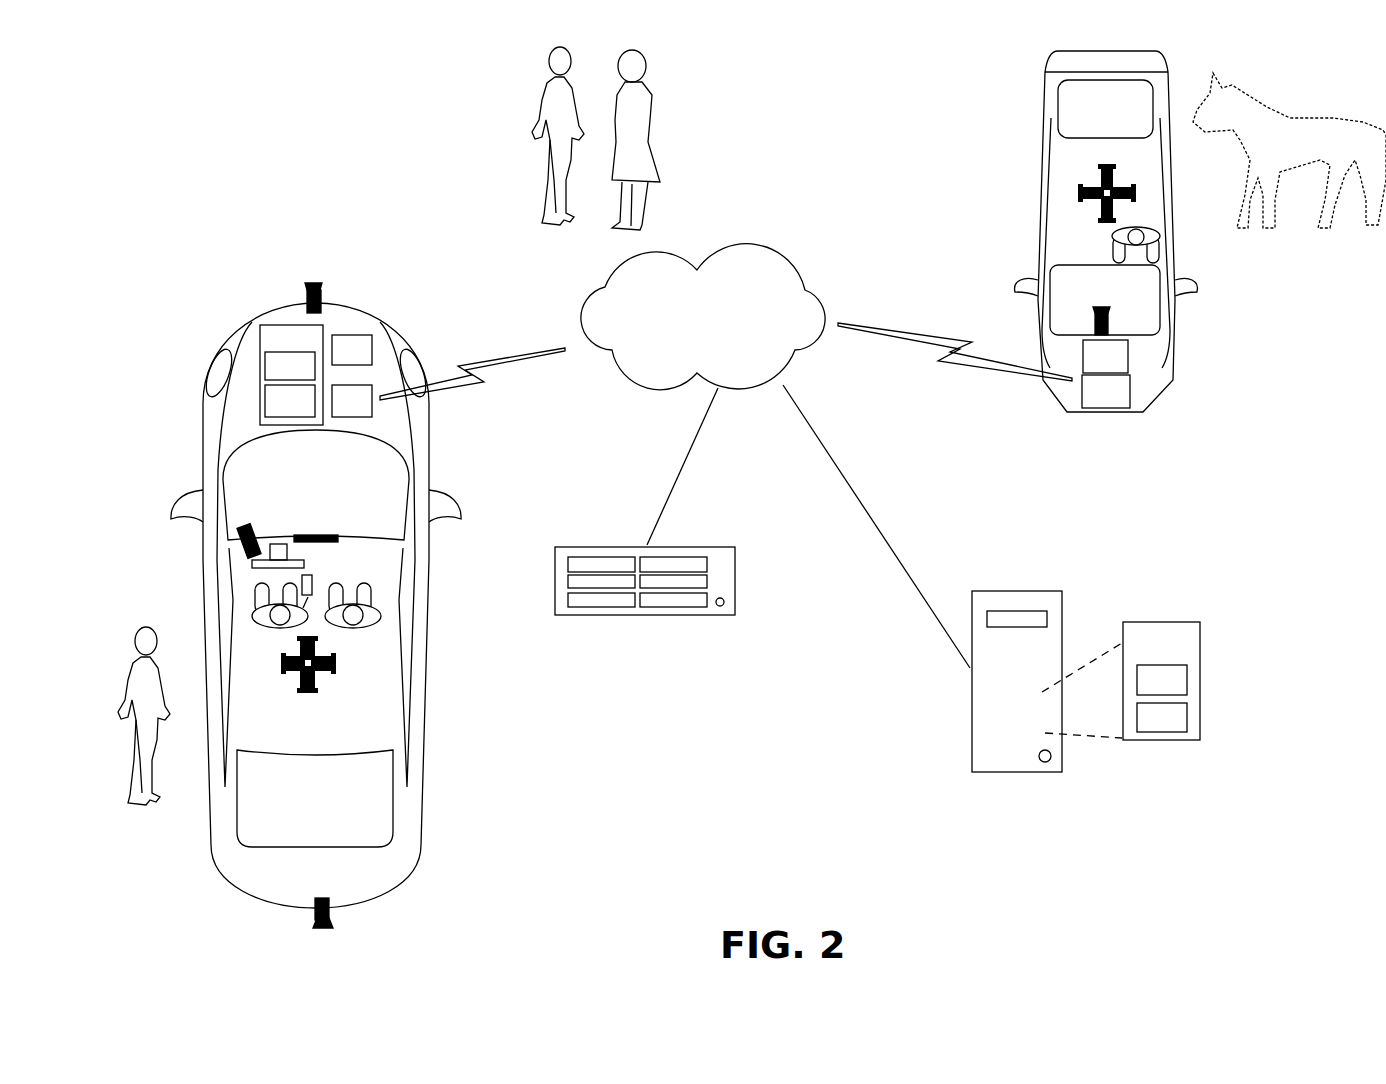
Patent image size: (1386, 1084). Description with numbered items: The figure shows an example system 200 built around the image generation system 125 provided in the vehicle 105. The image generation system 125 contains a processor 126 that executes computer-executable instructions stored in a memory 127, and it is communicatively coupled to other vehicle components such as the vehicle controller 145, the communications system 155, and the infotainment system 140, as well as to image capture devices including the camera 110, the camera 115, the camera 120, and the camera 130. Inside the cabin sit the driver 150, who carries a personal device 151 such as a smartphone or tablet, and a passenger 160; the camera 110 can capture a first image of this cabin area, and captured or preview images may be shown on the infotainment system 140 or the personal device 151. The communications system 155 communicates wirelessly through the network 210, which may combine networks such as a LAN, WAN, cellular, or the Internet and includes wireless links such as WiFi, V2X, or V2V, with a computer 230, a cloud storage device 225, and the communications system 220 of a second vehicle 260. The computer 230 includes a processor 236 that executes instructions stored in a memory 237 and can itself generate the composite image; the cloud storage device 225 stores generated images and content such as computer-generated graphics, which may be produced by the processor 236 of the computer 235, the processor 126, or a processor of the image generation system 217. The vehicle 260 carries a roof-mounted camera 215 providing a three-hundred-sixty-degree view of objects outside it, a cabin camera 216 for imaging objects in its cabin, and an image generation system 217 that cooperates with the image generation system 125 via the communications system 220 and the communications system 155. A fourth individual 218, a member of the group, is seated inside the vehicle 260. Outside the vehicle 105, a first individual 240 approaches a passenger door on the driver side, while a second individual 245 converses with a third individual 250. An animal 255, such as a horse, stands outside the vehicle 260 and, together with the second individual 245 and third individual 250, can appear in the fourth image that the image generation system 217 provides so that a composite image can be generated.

The vehicle 105 is at (178, 355).
The camera 110 is at (249, 524).
The camera 115 is at (328, 290).
The camera 120 is at (330, 907).
The image generation system 125 is at (275, 348).
The processor 126 is at (273, 376).
The memory 127 is at (273, 411).
The camera 130 is at (294, 678).
The infotainment system 140 is at (322, 533).
The vehicle controller 145 is at (335, 359).
The driver 150 is at (268, 626).
The personal device 151 is at (316, 578).
The communications system 155 is at (335, 410).
The passenger 160 is at (340, 628).
The system 200 is at (337, 133).
The network 210 is at (735, 299).
The camera 215 is at (1092, 183).
The camera 216 is at (1112, 325).
The image generation system 217 is at (1088, 366).
The fourth individual 218 is at (1107, 240).
The communications system 220 is at (1089, 401).
The cloud storage device 225 is at (584, 634).
The computer 230 is at (957, 751).
The computer 235 is at (1143, 655).
The processor 236 is at (1145, 690).
The memory 237 is at (1145, 727).
The first individual 240 is at (161, 828).
The second individual 245 is at (514, 154).
The third individual 250 is at (678, 125).
The animal 255 is at (1312, 250).
The vehicle 260 is at (993, 130).